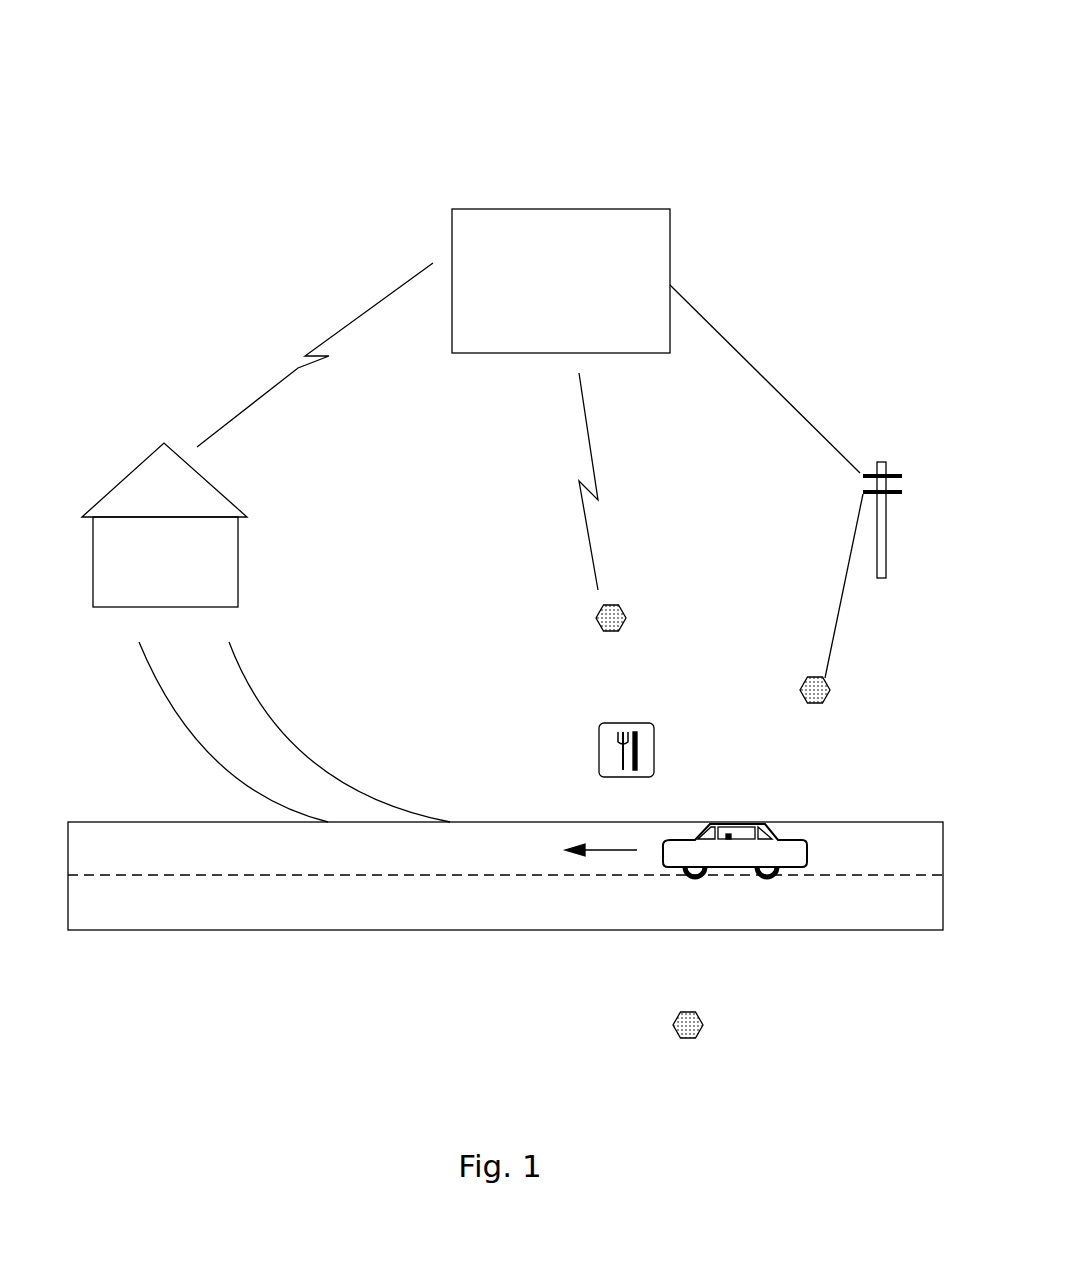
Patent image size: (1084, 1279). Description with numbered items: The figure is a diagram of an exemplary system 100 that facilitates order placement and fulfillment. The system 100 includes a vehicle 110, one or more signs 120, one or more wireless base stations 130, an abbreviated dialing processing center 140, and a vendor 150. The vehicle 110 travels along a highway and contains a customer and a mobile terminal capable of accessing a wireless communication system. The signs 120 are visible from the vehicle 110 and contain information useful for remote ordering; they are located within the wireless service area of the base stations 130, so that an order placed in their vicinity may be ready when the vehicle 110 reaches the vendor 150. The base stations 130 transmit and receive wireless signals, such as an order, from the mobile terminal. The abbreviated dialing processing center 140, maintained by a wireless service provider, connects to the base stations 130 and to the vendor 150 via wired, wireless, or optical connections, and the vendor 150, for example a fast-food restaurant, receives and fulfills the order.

The system 100 is at (691, 99).
The vehicle 110 is at (797, 842).
The signs 120 is at (615, 730).
The wireless base stations 130 is at (615, 605).
The abbreviated dialing processing center 140 is at (648, 228).
The vendor 150 is at (218, 570).